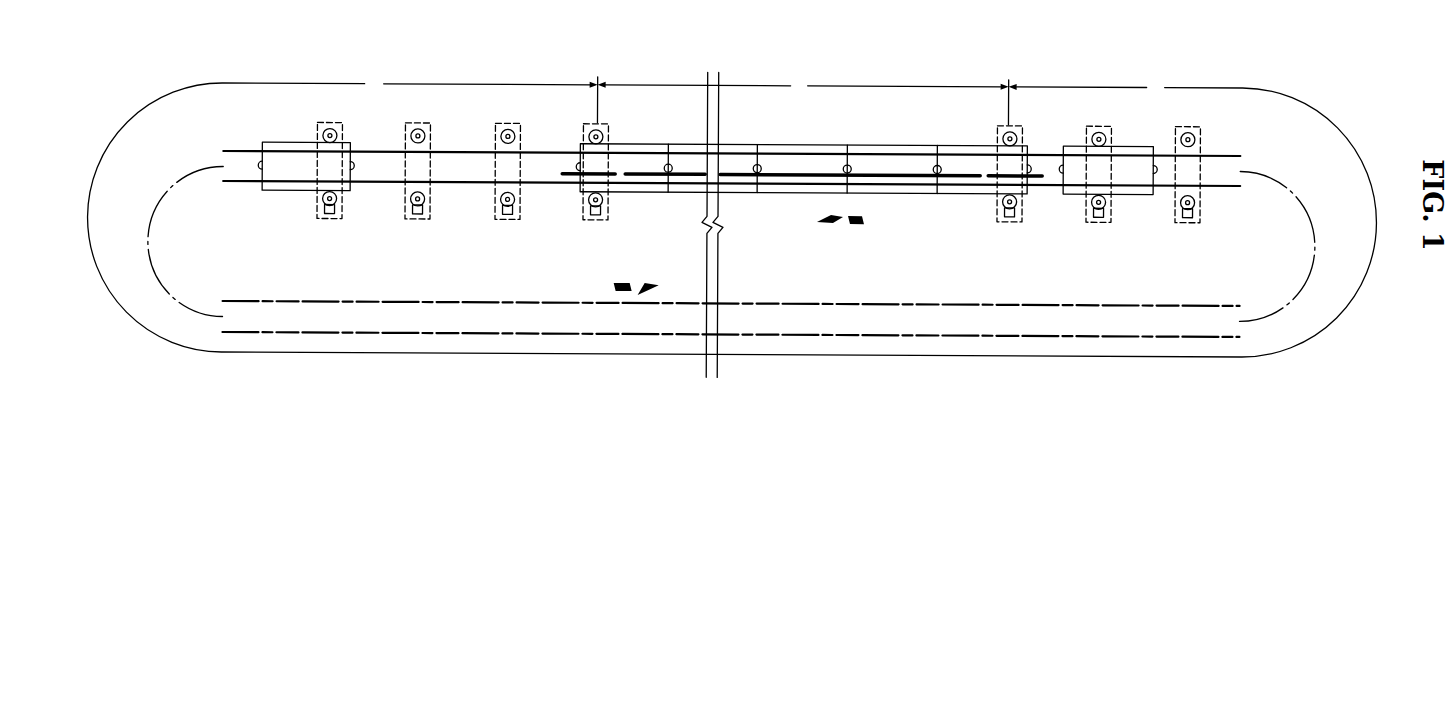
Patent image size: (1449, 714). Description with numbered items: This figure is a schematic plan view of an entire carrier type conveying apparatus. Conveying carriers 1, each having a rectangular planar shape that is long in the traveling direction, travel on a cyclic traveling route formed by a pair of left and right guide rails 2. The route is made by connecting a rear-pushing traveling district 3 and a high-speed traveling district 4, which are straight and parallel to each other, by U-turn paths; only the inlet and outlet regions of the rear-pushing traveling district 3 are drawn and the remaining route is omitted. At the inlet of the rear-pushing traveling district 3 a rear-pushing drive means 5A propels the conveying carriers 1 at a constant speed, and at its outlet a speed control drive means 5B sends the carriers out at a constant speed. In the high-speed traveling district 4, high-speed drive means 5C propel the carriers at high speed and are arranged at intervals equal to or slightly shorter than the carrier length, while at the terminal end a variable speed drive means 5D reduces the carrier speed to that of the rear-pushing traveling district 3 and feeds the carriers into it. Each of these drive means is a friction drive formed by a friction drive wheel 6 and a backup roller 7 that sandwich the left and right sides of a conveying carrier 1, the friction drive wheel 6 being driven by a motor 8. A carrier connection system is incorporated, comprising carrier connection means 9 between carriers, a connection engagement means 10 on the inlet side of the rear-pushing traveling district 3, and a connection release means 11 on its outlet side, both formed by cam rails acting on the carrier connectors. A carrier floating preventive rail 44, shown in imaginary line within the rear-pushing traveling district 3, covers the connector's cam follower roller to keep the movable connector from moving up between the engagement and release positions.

The conveying carrier 1 is at (288, 142).
The guide rail 2 is at (475, 181).
The rear-pushing traveling district 3 is at (802, 99).
The high-speed traveling district 4 is at (732, 214).
The rear-pushing drive means 5A is at (997, 118).
The speed control drive means 5B is at (583, 118).
The high-speed drive means 5C is at (325, 218).
The variable speed drive means 5D is at (1098, 118).
The friction drive wheel 6 is at (338, 203).
The backup roller 7 is at (328, 128).
The motor 8 is at (320, 200).
The carrier connection means 9 is at (262, 165).
The connection engagement means 10 is at (1003, 170).
The connection release means 11 is at (605, 172).
The carrier floating preventive rail 44 is at (887, 183).